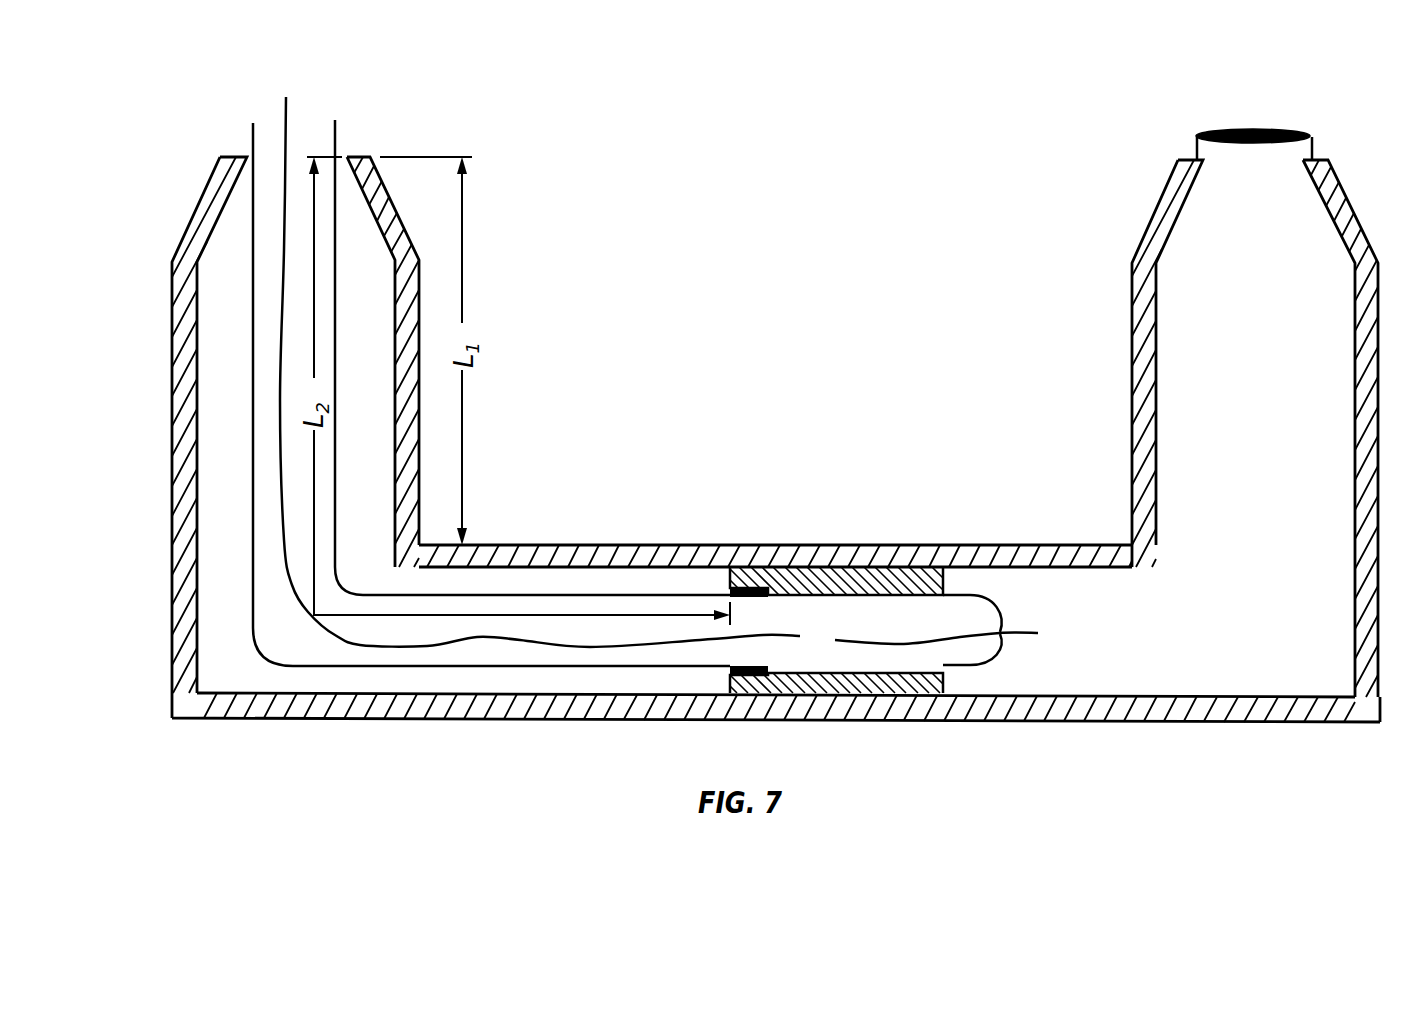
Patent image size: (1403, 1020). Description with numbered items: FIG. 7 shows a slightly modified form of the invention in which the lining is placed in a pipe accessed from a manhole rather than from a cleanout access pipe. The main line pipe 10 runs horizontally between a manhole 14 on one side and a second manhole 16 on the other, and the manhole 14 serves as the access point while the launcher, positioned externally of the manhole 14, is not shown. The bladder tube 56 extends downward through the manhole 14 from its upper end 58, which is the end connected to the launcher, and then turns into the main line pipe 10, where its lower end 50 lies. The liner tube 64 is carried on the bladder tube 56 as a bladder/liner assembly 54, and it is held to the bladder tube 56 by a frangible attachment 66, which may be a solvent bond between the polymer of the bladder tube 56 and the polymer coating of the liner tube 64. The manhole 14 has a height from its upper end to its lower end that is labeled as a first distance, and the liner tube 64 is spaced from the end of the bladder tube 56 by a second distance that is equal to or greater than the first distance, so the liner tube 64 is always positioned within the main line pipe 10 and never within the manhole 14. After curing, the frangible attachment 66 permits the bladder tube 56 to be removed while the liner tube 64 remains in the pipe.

The main line pipe 10 is at (1075, 545).
The manhole 14 is at (172, 310).
The manhole 16 is at (1132, 312).
The lower end 50 is at (1002, 632).
The bladder/liner assembly 54 is at (964, 585).
The bladder tube 56 is at (610, 595).
The upper end 58 is at (265, 120).
The liner tube 64 is at (850, 567).
The frangible attachment 66 is at (748, 588).